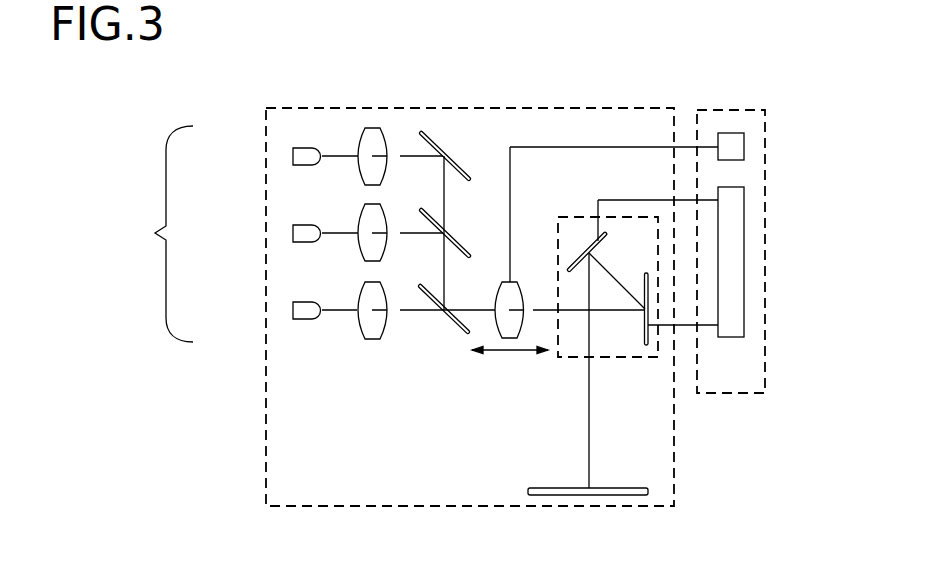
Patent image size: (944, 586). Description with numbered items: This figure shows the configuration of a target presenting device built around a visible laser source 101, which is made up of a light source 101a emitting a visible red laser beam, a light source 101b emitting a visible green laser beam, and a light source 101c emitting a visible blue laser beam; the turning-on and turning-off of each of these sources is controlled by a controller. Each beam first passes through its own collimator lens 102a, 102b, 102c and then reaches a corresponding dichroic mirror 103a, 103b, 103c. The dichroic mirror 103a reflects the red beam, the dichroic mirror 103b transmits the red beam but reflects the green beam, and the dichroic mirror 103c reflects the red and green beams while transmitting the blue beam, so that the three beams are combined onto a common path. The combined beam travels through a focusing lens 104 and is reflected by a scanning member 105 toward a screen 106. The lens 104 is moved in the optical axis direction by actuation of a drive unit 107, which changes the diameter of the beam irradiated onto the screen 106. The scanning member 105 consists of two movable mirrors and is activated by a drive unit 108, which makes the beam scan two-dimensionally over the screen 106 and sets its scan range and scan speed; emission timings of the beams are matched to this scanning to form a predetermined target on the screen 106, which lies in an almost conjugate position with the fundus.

The visible laser source 101 is at (148, 234).
The light source 101a is at (293, 156).
The light source 101b is at (293, 233).
The light source 101c is at (293, 310).
The collimator lens 102a is at (370, 143).
The collimator lens 102b is at (368, 220).
The collimator lens 102c is at (370, 322).
The dichroic mirror 103a is at (443, 140).
The dichroic mirror 103b is at (462, 243).
The dichroic mirror 103c is at (455, 320).
The lens 104 is at (502, 318).
The scanning member 105 is at (617, 358).
The screen 106 is at (608, 495).
The drive unit 107 is at (745, 147).
The drive unit 108 is at (745, 255).